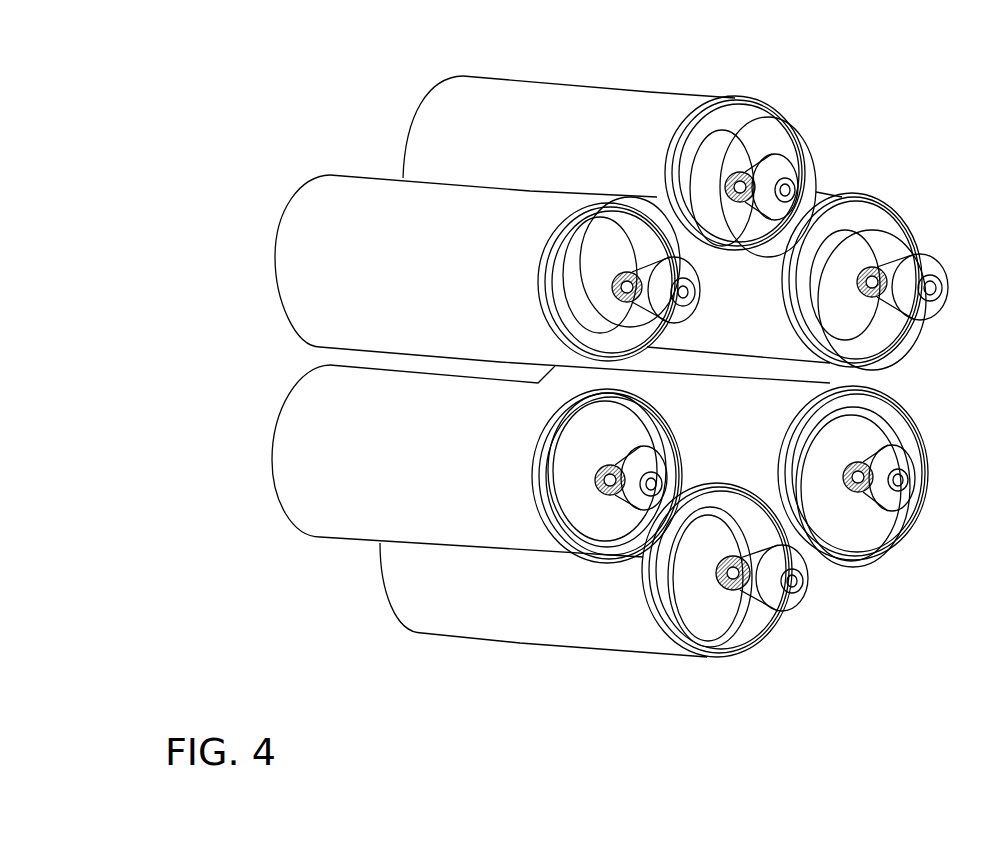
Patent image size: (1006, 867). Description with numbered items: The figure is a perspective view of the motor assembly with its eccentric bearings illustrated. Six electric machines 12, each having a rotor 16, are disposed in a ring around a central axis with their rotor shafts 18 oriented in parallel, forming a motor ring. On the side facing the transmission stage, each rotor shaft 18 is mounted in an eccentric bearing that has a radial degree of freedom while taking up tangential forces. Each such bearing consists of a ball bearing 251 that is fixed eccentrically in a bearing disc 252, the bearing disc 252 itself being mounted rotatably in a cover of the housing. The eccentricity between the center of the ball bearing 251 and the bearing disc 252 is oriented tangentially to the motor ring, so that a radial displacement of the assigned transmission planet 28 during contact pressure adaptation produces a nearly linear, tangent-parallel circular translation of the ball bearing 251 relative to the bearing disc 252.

The electric machine 12 is at (432, 133).
The rotor 16 is at (573, 273).
The rotor shaft 18 is at (635, 283).
The transmission planet 28 is at (665, 263).
The ball bearing 251 is at (613, 258).
The bearing disc 252 is at (597, 253).